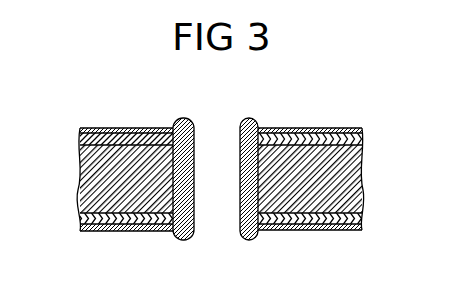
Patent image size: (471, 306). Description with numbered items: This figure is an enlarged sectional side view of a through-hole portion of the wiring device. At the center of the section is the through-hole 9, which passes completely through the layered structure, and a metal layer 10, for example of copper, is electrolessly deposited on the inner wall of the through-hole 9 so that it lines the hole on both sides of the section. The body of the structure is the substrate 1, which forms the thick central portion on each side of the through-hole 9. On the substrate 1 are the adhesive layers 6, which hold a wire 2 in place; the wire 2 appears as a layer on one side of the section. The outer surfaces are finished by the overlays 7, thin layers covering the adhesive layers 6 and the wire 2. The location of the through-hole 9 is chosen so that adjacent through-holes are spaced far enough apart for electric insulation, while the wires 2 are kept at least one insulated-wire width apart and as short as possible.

The substrate 1 is at (362, 176).
The wire 2 is at (80, 141).
The adhesive layers 6 is at (80, 218).
The overlays 7 is at (131, 232).
The through-hole 9 is at (213, 143).
The metal layer 10 is at (250, 242).